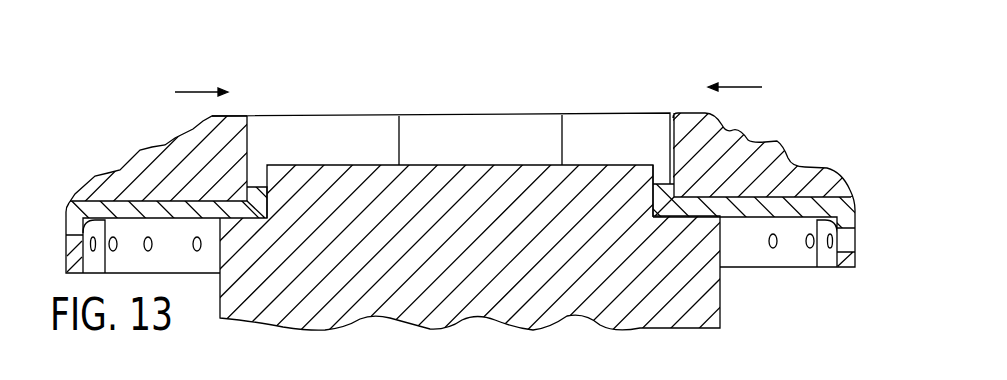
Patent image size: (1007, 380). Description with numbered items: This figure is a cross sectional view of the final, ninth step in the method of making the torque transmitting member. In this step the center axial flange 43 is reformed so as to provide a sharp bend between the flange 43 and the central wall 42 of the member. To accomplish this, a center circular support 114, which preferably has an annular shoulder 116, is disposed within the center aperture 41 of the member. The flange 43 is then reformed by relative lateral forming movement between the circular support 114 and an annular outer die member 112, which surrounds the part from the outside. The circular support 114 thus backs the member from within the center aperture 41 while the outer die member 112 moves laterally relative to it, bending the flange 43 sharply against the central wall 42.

The center aperture 41 is at (643, 203).
The central wall 42 is at (765, 190).
The center axial flange 43 is at (663, 183).
The annular outer die member 112 is at (777, 141).
The center circular support 114 is at (596, 326).
The annular shoulder 116 is at (684, 217).